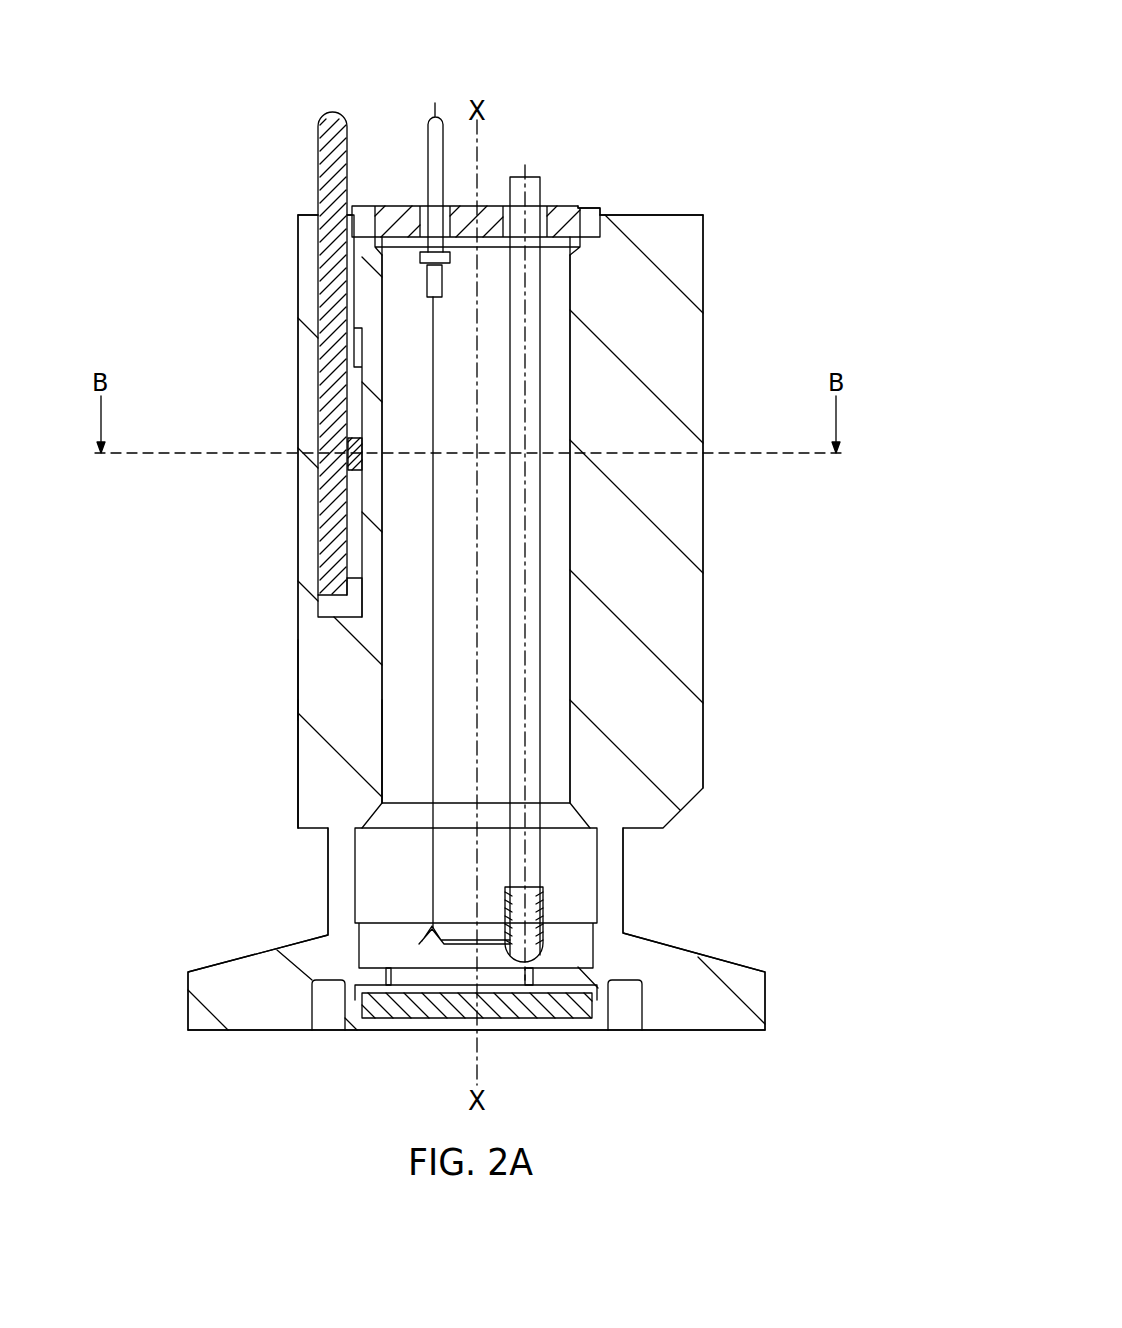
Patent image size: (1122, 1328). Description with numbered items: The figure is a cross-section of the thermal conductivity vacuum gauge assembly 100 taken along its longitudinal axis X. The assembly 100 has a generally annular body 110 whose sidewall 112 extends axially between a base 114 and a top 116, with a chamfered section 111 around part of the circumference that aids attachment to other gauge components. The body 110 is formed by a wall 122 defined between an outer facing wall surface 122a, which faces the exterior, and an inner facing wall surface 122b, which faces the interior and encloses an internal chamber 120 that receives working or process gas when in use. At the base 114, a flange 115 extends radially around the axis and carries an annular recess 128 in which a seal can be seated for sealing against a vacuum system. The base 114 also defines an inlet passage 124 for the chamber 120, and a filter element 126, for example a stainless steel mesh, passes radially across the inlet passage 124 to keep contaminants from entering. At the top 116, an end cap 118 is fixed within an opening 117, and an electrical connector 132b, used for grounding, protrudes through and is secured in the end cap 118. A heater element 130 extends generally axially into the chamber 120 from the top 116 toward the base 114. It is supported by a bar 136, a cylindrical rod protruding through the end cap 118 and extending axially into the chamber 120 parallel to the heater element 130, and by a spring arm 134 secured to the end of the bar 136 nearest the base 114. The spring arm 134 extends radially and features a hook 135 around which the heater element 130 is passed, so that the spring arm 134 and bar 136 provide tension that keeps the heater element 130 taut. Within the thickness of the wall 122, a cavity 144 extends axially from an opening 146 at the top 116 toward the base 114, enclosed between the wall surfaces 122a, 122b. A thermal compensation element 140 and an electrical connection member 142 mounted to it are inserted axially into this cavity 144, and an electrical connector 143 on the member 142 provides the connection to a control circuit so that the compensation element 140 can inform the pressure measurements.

The assembly 100 is at (792, 90).
The body 110 is at (714, 353).
The chamfered section 111 is at (298, 713).
The sidewall 112 is at (690, 525).
The base 114 is at (693, 1032).
The flange 115 is at (722, 1003).
The top 116 is at (660, 213).
The opening 117 is at (580, 211).
The end cap 118 is at (567, 218).
The internal chamber 120 is at (555, 665).
The wall 122 is at (333, 652).
The outer facing wall surface 122a is at (298, 677).
The inner facing wall surface 122b is at (382, 730).
The inlet passage 124 is at (598, 905).
The filter element 126 is at (425, 1005).
The recess 128 is at (328, 1013).
The heater element 130 is at (425, 445).
The electrical connector 132b is at (430, 148).
The spring arm 134 is at (485, 945).
The hook 135 is at (423, 937).
The bar 136 is at (530, 770).
The thermal compensation element 140 is at (348, 458).
The electrical connection member 142 is at (340, 305).
The electrical connector 143 is at (318, 128).
The cavity 144 is at (333, 608).
The opening 146 is at (317, 214).